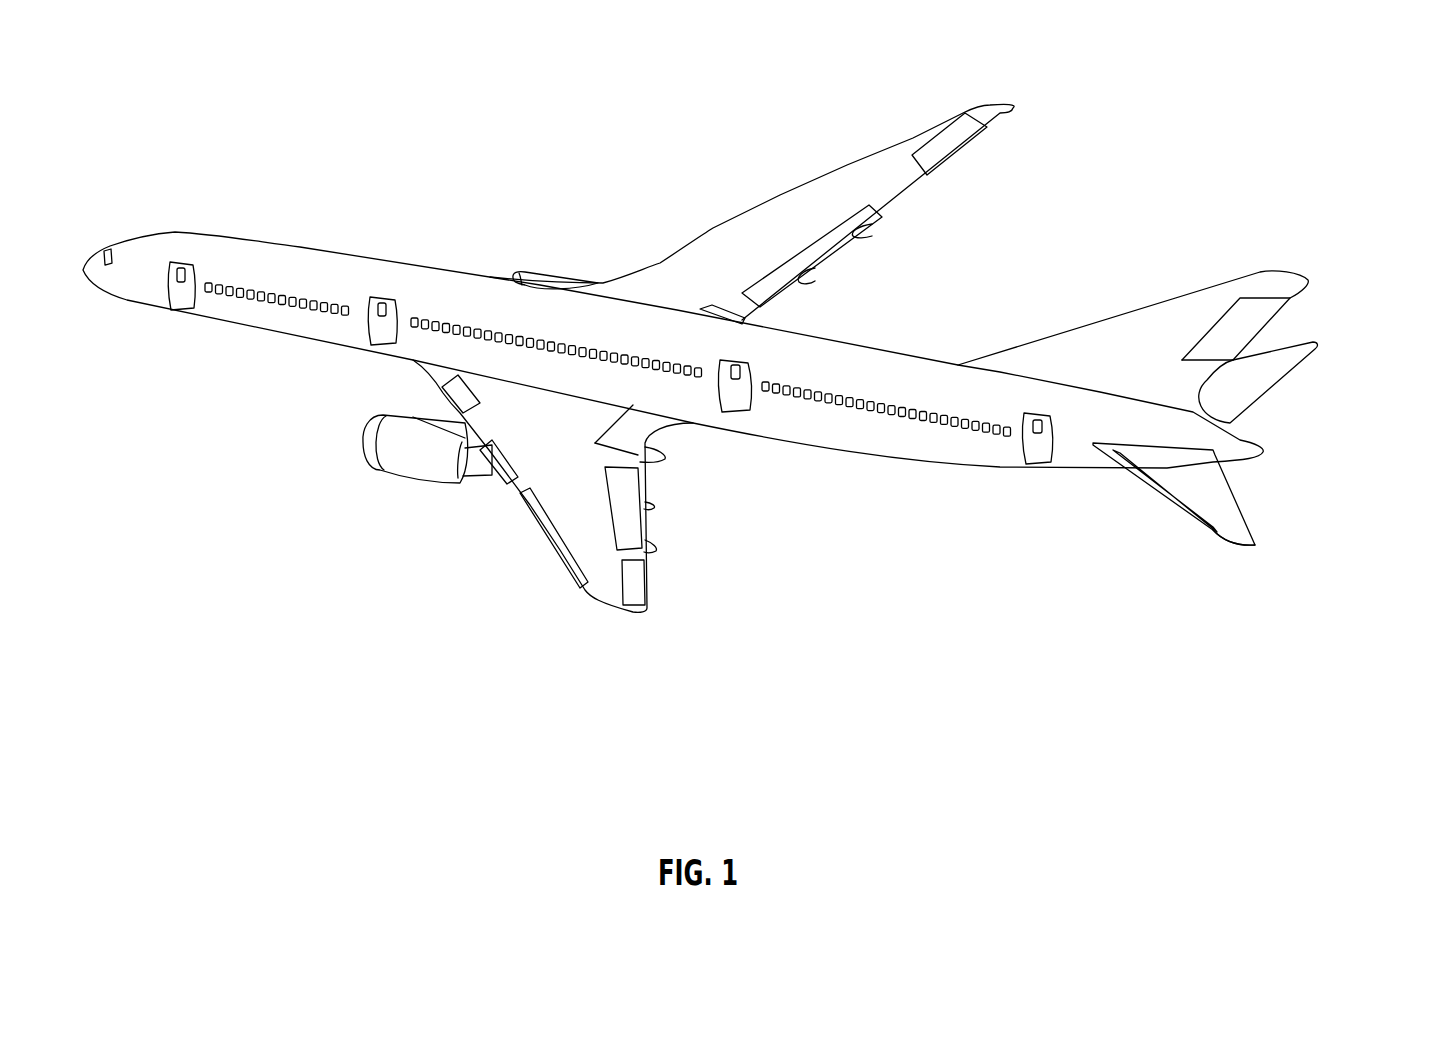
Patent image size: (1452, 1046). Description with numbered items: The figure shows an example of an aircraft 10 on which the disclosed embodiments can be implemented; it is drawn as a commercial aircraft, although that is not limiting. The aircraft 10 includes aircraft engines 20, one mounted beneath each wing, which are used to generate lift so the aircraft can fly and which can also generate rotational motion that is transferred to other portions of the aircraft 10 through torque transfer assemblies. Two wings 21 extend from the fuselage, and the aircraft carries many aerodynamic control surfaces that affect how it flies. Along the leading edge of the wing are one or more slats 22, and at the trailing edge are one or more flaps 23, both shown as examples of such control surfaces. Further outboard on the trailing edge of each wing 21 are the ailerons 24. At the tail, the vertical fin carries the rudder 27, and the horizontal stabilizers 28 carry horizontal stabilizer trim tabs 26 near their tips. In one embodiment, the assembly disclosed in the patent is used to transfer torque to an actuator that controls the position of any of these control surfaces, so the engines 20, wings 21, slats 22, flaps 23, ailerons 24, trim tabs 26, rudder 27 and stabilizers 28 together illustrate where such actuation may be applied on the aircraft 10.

The aircraft 10 is at (361, 71).
The aircraft engines 20 is at (393, 513).
The wings 21 is at (793, 195).
The slats 22 is at (540, 542).
The flaps 23 is at (872, 217).
The ailerons 24 is at (957, 152).
The horizontal stabilizer trim tabs 26 is at (1233, 540).
The rudder 27 is at (1245, 330).
The horizontal stabilizers 28 is at (1165, 495).